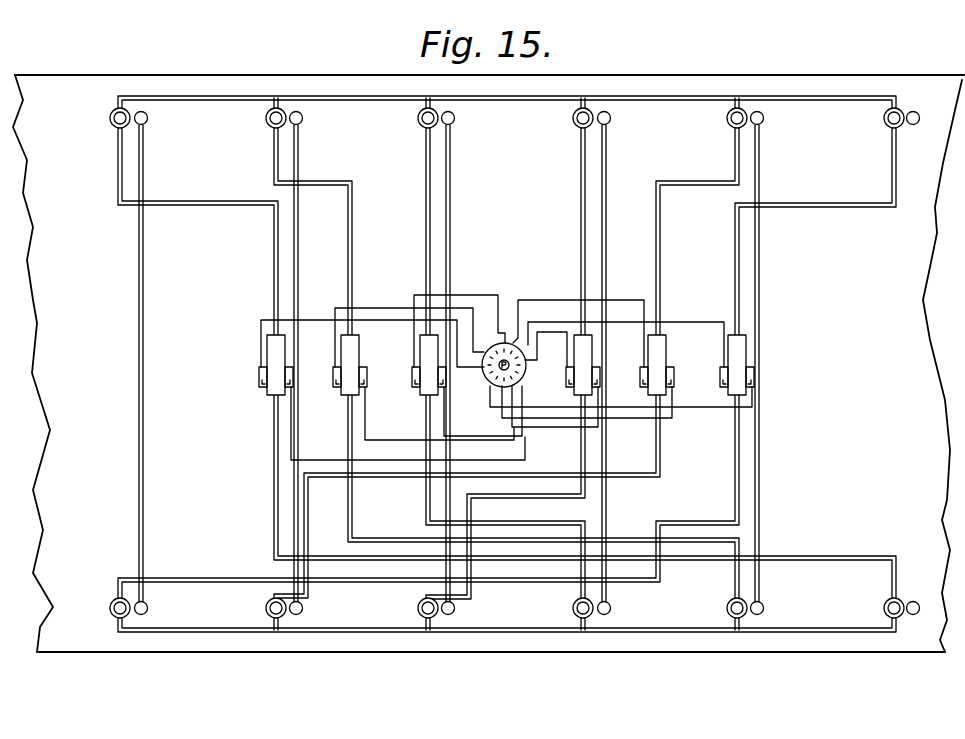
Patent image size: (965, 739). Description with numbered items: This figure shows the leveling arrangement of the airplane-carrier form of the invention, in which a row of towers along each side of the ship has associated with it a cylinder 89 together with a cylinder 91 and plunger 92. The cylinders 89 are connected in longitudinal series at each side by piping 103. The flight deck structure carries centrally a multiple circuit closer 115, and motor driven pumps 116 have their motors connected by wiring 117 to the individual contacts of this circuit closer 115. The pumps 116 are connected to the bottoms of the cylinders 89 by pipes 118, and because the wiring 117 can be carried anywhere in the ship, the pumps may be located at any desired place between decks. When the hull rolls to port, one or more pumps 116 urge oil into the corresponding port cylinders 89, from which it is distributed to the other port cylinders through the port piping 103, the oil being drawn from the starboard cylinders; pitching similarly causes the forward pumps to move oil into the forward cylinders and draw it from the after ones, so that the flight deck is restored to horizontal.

The piping 103 is at (218, 100).
The cylinder 89 is at (270, 126).
The cylinder 91 is at (301, 124).
The plunger 92 is at (148, 608).
The pipes 118 is at (279, 280).
The wiring 117 is at (606, 305).
The motor driven pumps 116 is at (341, 351).
The multiple circuit closer 115 is at (490, 376).